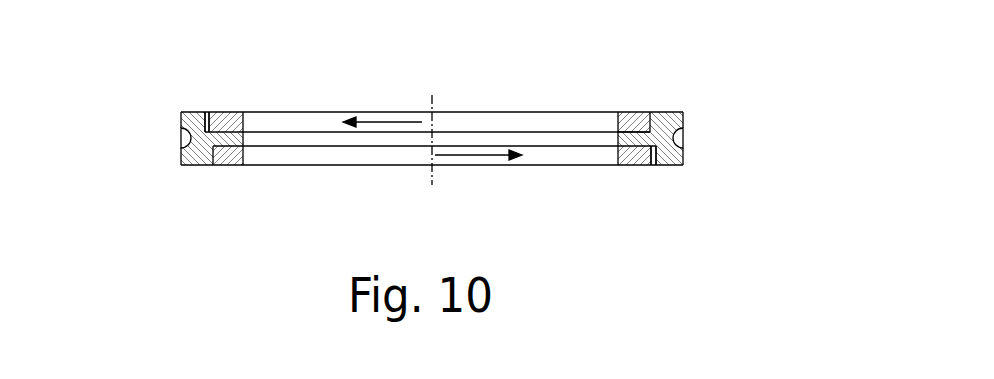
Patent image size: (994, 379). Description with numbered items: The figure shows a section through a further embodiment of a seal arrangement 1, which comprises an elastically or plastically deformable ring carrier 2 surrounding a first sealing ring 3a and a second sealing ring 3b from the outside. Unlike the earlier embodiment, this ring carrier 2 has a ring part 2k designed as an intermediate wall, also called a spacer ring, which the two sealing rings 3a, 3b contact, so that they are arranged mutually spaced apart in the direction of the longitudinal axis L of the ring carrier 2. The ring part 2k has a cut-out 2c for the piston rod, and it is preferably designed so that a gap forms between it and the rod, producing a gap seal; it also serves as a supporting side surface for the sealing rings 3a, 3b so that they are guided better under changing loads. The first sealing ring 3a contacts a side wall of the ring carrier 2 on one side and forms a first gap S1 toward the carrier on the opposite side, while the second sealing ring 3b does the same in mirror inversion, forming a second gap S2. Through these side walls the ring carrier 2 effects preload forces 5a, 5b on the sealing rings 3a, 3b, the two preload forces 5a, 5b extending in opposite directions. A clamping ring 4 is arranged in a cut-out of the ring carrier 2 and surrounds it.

The seal arrangement 1 is at (755, 58).
The ring carrier 2 is at (192, 122).
The cut-out 2c is at (587, 163).
The ring part 2k is at (629, 131).
The first sealing ring 3a is at (238, 122).
The second sealing ring 3b is at (222, 156).
The clamping ring 4 is at (184, 140).
The preload force 5a is at (365, 121).
The preload force 5b is at (477, 163).
The first gap S1 is at (210, 122).
The second gap S2 is at (657, 164).
The longitudinal axis L is at (433, 106).